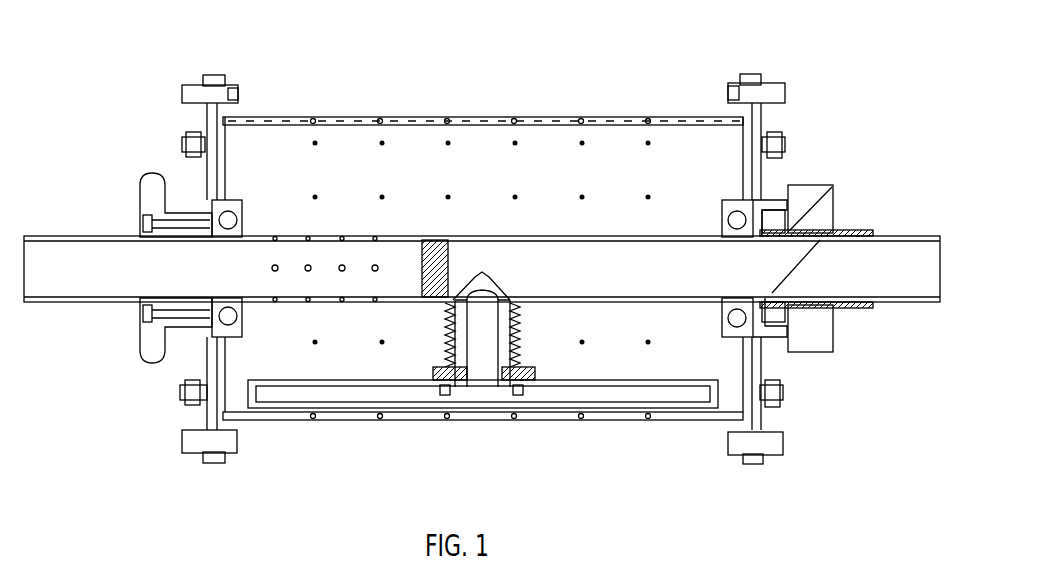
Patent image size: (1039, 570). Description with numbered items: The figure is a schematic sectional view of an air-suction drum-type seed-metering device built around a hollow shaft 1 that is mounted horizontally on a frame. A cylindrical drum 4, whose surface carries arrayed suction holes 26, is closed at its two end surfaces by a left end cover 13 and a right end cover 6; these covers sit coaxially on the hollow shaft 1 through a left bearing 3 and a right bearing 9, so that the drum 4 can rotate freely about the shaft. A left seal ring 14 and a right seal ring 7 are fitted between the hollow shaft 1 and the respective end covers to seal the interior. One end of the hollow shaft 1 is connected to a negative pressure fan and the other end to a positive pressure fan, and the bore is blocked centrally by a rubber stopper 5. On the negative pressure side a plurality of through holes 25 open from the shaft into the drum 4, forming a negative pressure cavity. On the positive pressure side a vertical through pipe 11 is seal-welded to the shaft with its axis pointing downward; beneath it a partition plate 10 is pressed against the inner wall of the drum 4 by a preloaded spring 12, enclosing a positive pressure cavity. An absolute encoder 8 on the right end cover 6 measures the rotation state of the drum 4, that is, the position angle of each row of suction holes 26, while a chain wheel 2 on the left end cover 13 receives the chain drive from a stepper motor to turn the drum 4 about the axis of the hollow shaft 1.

The hollow shaft 1 is at (100, 268).
The chain wheel 2 is at (152, 195).
The left bearing 3 is at (217, 217).
The drum 4 is at (290, 118).
The rubber stopper 5 is at (440, 243).
The right end cover 6 is at (745, 140).
The right seal ring 7 is at (797, 233).
The absolute encoder 8 is at (793, 315).
The right bearing 9 is at (762, 360).
The partition plate 10 is at (613, 385).
The vertical through pipe 11 is at (512, 385).
The spring 12 is at (437, 380).
The left end cover 13 is at (202, 405).
The left seal ring 14 is at (148, 360).
The through hole 25 is at (308, 265).
The suction hole 26 is at (382, 120).